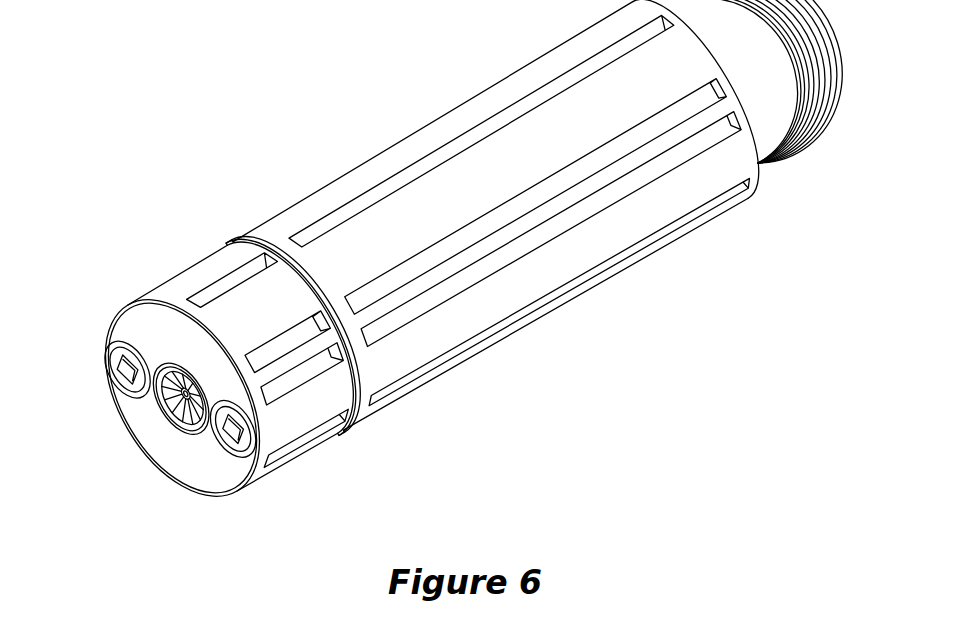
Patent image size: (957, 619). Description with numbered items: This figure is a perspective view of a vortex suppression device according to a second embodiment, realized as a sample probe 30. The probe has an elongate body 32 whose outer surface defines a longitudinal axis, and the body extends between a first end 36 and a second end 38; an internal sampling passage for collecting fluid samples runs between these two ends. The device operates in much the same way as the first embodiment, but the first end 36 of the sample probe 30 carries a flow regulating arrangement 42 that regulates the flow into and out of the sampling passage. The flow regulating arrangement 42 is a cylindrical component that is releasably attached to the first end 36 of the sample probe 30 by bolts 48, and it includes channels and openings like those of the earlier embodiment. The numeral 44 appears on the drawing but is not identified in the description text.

The filter body 30 is at (485, 173).
The body slots 32 is at (400, 222).
The end cap 36 is at (195, 478).
The threaded connector 38 is at (830, 32).
The cap slots 42 is at (172, 286).
The central valve element 44 is at (172, 420).
The socket fastener 48 is at (128, 373).